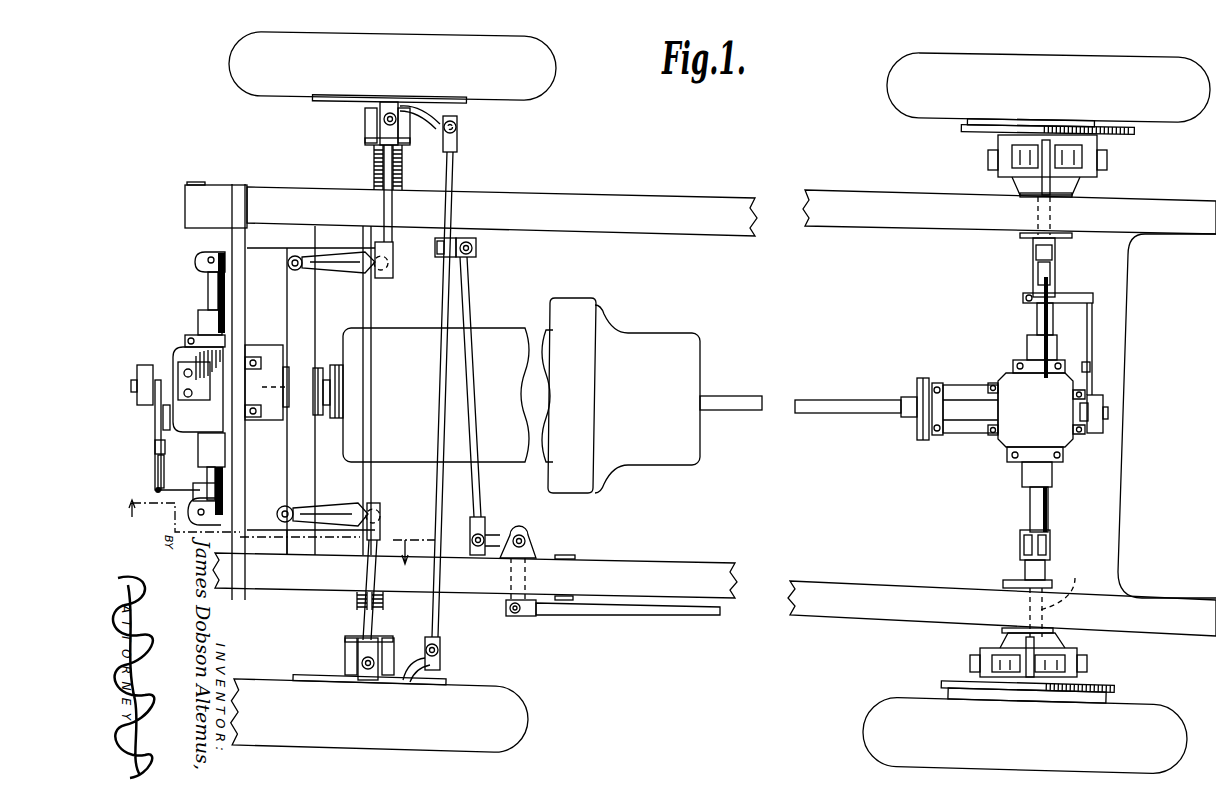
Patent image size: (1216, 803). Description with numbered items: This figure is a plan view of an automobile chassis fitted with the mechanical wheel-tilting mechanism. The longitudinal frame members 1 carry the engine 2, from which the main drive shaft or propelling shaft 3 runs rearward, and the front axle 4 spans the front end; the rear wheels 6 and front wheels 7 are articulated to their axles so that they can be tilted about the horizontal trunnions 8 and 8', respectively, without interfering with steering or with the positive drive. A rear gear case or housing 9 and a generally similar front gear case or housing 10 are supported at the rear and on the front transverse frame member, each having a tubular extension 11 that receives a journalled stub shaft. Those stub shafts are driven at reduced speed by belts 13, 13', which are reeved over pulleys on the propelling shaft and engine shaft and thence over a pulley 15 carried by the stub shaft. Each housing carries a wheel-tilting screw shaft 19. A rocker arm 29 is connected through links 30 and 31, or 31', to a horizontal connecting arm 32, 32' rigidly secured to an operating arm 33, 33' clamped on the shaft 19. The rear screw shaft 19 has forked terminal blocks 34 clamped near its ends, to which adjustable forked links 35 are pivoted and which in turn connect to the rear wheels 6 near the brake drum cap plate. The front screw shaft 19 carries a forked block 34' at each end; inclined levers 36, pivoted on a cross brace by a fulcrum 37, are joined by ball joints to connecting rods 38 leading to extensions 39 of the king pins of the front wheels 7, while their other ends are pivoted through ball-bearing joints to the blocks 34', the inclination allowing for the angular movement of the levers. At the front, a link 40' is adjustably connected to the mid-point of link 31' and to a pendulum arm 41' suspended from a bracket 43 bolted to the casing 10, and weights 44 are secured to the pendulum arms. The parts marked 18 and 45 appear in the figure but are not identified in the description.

The longitudinal frame members 1 is at (710, 215).
The engine 2 is at (552, 395).
The main drive shaft 3 is at (822, 400).
The front axle 4 is at (375, 178).
The rear wheels 6 is at (962, 58).
The front wheels 7 is at (300, 45).
The horizontal trunnions 8 is at (624, 410).
The horizontal trunnions 8' is at (354, 391).
The rear gear case 9 is at (1012, 385).
The front gear case 10 is at (183, 345).
The tubular extension 11 is at (264, 362).
The belt 13 is at (922, 389).
The belt 13' is at (328, 365).
The pulley 15 is at (916, 390).
The collar 18 is at (1030, 345).
The screw shaft 19 is at (208, 297).
The rocker arm 29 is at (1095, 410).
The link 30 is at (1093, 385).
The floating lever 31 is at (1122, 356).
The horizontal connecting arm 32 is at (1106, 349).
The operating arm 33 is at (1059, 283).
The forked terminal blocks 34 is at (1035, 410).
The forked block 34' is at (207, 388).
The adjustable forked links 35 is at (1022, 185).
The inclined levers 36 is at (262, 258).
The fulcrum 37 is at (300, 262).
The connecting rods 38 is at (400, 178).
The king pin extensions 39 is at (378, 127).
The link 40' is at (142, 432).
The pendulum arm 41' is at (133, 378).
The bracket 43 is at (178, 372).
The weights 44 is at (147, 395).
The bearing cap 45 is at (1063, 158).
The floating lever 31' is at (140, 460).
The horizontal connecting arm 32' is at (176, 467).
The operating arm 33' is at (179, 481).